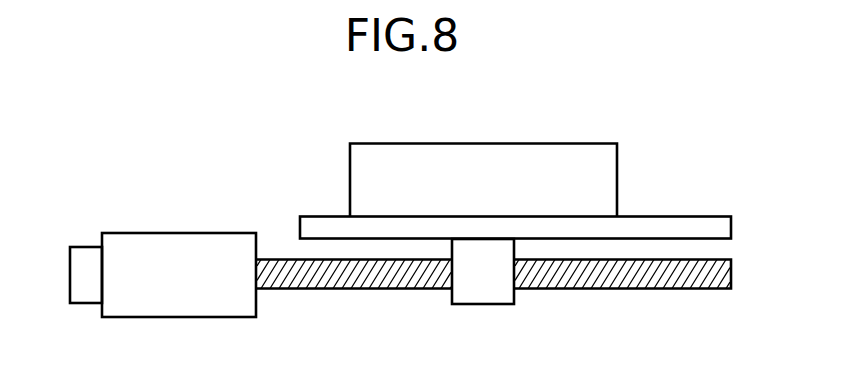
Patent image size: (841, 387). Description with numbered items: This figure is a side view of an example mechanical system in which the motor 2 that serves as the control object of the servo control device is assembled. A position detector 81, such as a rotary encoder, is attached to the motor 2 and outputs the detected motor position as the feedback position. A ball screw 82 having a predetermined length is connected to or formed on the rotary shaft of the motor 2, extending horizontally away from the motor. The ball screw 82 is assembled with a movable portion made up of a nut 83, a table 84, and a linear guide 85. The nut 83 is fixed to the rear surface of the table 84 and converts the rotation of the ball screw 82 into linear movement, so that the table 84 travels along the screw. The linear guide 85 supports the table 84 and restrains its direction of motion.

The motor 2 is at (194, 232).
The position detector 81 is at (83, 246).
The ball screw 82 is at (648, 290).
The nut 83 is at (483, 305).
The table 84 is at (580, 142).
The linear guide 85 is at (688, 215).